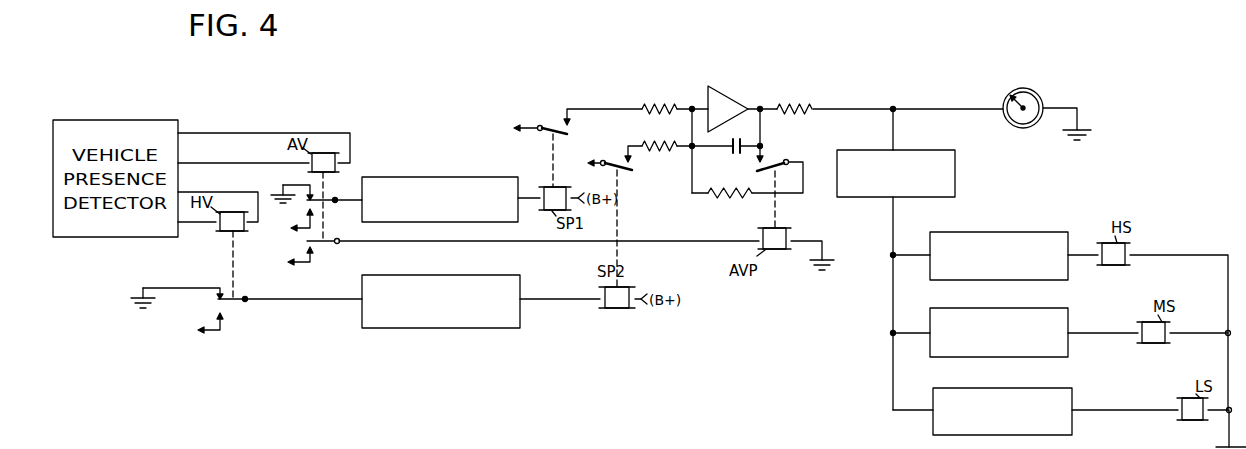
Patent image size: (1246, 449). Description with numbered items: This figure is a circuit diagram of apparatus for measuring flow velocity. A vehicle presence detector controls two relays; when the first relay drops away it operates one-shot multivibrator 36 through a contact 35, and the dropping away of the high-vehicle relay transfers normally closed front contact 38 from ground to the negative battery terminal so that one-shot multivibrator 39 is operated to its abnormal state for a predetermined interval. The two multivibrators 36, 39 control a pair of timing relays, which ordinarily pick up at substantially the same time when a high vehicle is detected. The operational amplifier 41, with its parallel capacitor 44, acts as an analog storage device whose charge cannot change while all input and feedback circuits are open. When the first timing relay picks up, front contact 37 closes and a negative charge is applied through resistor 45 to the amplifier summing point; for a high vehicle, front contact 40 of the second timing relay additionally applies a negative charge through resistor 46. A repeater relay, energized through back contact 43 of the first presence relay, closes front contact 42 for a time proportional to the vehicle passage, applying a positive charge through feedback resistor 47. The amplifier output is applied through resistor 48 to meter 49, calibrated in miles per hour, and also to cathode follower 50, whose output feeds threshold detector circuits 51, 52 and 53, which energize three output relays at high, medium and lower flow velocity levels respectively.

The switch contact of AV relay 35 is at (316, 210).
The one-shot multivibrator 36 is at (424, 176).
The front contact of relay SP1 37 is at (559, 131).
The front contact of relay HV 38 is at (236, 305).
The one-shot multivibrator 39 is at (439, 268).
The front contact of relay SP2 40 is at (622, 169).
The operational amplifier 41 is at (723, 94).
The front contact of relay AVP 42 is at (777, 168).
The back contact of relay AV 43 is at (329, 246).
The capacitor 44 is at (735, 153).
The resistor 45 is at (659, 105).
The resistor 46 is at (652, 145).
The feedback resistor 47 is at (723, 198).
The resistor 48 is at (812, 106).
The meter 49 is at (1041, 93).
The cathode follower 50 is at (911, 150).
The threshold detector circuit 51 is at (985, 231).
The threshold detector circuit 52 is at (997, 309).
The threshold detector circuit 53 is at (1000, 388).